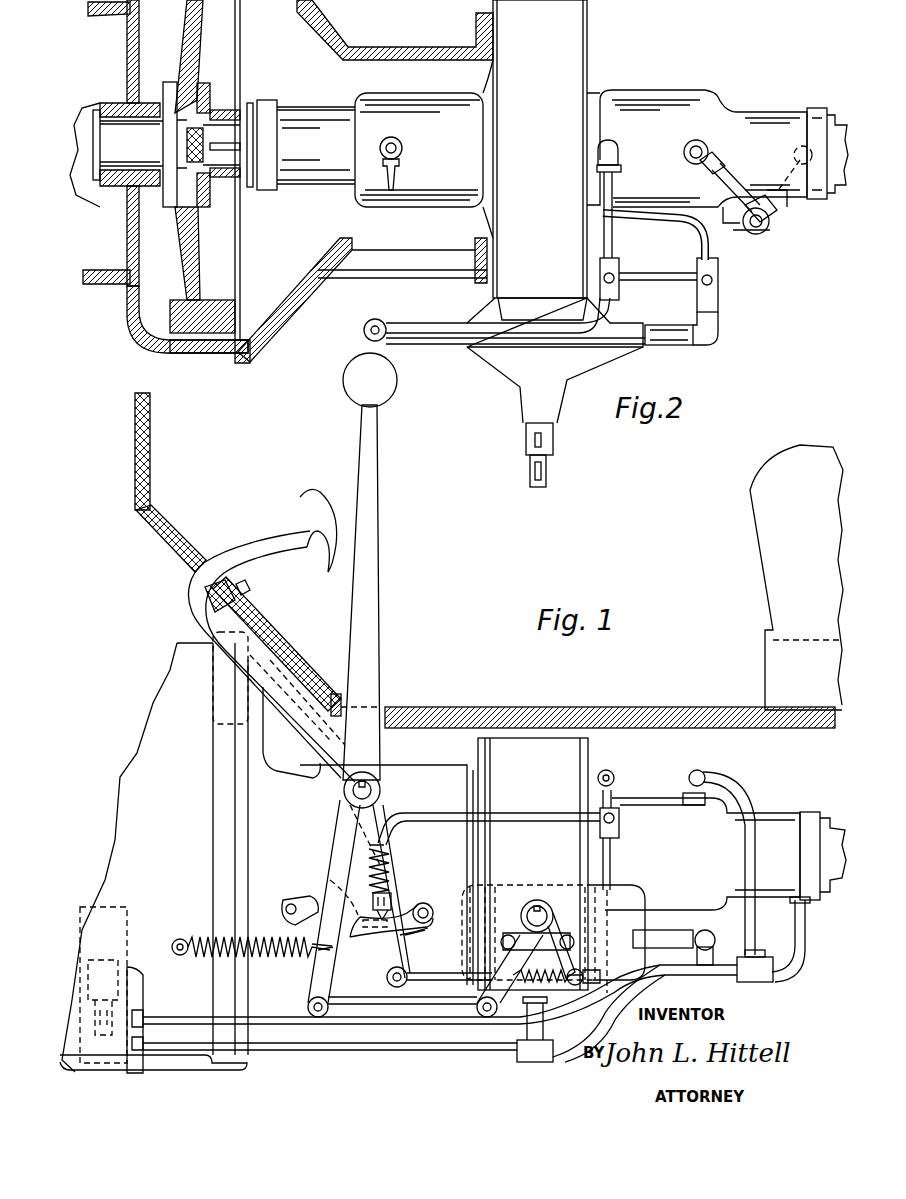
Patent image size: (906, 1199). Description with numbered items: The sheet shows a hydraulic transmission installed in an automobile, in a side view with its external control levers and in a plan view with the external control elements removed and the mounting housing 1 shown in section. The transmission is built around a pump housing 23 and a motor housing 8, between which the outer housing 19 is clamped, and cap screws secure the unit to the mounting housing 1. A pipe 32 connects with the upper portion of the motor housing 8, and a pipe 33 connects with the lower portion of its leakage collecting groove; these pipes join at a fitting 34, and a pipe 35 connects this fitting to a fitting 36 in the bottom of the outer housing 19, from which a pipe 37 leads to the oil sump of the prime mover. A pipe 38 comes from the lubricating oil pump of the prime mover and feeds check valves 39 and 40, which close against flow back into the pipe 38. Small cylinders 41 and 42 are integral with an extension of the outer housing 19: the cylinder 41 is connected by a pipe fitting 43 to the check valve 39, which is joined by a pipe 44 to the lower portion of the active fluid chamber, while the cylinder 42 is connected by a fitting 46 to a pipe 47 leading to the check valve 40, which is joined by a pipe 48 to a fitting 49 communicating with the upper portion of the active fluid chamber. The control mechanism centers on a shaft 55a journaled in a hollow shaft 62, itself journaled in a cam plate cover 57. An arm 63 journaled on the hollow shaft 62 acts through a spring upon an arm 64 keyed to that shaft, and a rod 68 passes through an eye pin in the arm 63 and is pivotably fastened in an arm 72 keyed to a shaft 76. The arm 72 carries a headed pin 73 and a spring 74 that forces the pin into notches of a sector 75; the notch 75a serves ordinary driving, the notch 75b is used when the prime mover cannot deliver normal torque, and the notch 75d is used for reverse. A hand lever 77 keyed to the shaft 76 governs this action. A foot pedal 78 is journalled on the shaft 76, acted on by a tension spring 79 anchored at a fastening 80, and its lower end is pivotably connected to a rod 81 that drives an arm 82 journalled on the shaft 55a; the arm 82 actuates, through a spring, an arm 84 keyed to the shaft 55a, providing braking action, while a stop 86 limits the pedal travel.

In FIG. 1, the mounting housing 1 is at (402, 771).
In FIG. 2, the motor housing 8 is at (727, 108).
In FIG. 1, the motor housing 8 is at (775, 816).
In FIG. 2, the outer housing 19 is at (540, 160).
In FIG. 1, the outer housing 19 is at (533, 864).
In FIG. 2, the pump housing 23 is at (358, 105).
In FIG. 2, the pipe 32 is at (733, 172).
In FIG. 1, the pipe 32 is at (747, 796).
In FIG. 2, the pipe 33 is at (778, 201).
In FIG. 1, the pipe 33 is at (802, 933).
In FIG. 2, the fitting 34 is at (770, 226).
In FIG. 1, the fitting 34 is at (771, 981).
In FIG. 2, the pipe 35 is at (738, 232).
In FIG. 1, the pipe 35 is at (739, 983).
In FIG. 1, the fitting 36 is at (540, 1062).
In FIG. 1, the pipe 37 is at (350, 1052).
In FIG. 2, the pipe 38 is at (362, 278).
In FIG. 1, the pipe 38 is at (611, 862).
In FIG. 2, the check valve 39 is at (719, 298).
In FIG. 1, the check valve 39 is at (718, 953).
In FIG. 2, the check valve 40 is at (619, 289).
In FIG. 1, the check valve 40 is at (620, 825).
In FIG. 2, the small cylinder 41 is at (672, 343).
In FIG. 1, the small cylinder 41 is at (656, 937).
In FIG. 2, the small cylinder 42 is at (442, 345).
In FIG. 1, the small cylinder 42 is at (426, 936).
In FIG. 2, the pipe fitting 43 is at (718, 334).
In FIG. 1, the pipe fitting 43 is at (714, 941).
In FIG. 2, the pipe 44 is at (707, 245).
In FIG. 2, the fitting 46 is at (366, 330).
In FIG. 1, the fitting 46 is at (370, 937).
In FIG. 2, the pipe 47 is at (410, 328).
In FIG. 1, the pipe 47 is at (430, 818).
In FIG. 2, the pipe 48 is at (613, 239).
In FIG. 1, the pipe 48 is at (612, 797).
In FIG. 2, the fitting 49 is at (618, 156).
In FIG. 1, the fitting 49 is at (612, 771).
In FIG. 2, the shaft 55a is at (546, 470).
In FIG. 2, the cam plate cover 57 is at (512, 365).
In FIG. 1, the cam plate cover 57 is at (505, 895).
In FIG. 2, the hollow shaft 62 is at (553, 437).
In FIG. 1, the arm 63 is at (608, 938).
In FIG. 1, the arm 64 is at (562, 928).
In FIG. 1, the rod 68 is at (445, 975).
In FIG. 1, the arm 72 is at (403, 963).
In FIG. 1, the headed pin 73 is at (396, 897).
In FIG. 1, the spring 74 is at (392, 871).
In FIG. 1, the sector 75 is at (434, 905).
In FIG. 1, the notch 75a is at (345, 905).
In FIG. 1, the notch 75b is at (345, 887).
In FIG. 1, the notch 75d is at (420, 913).
In FIG. 1, the shaft 76 is at (350, 796).
In FIG. 1, the hand lever 77 is at (368, 639).
In FIG. 1, the foot pedal 78 is at (265, 548).
In FIG. 1, the tension spring 79 is at (315, 945).
In FIG. 1, the fastening 80 is at (178, 939).
In FIG. 1, the rod 81 is at (340, 1003).
In FIG. 1, the arm 82 is at (498, 1008).
In FIG. 1, the arm 84 is at (522, 923).
In FIG. 1, the stop 86 is at (247, 590).